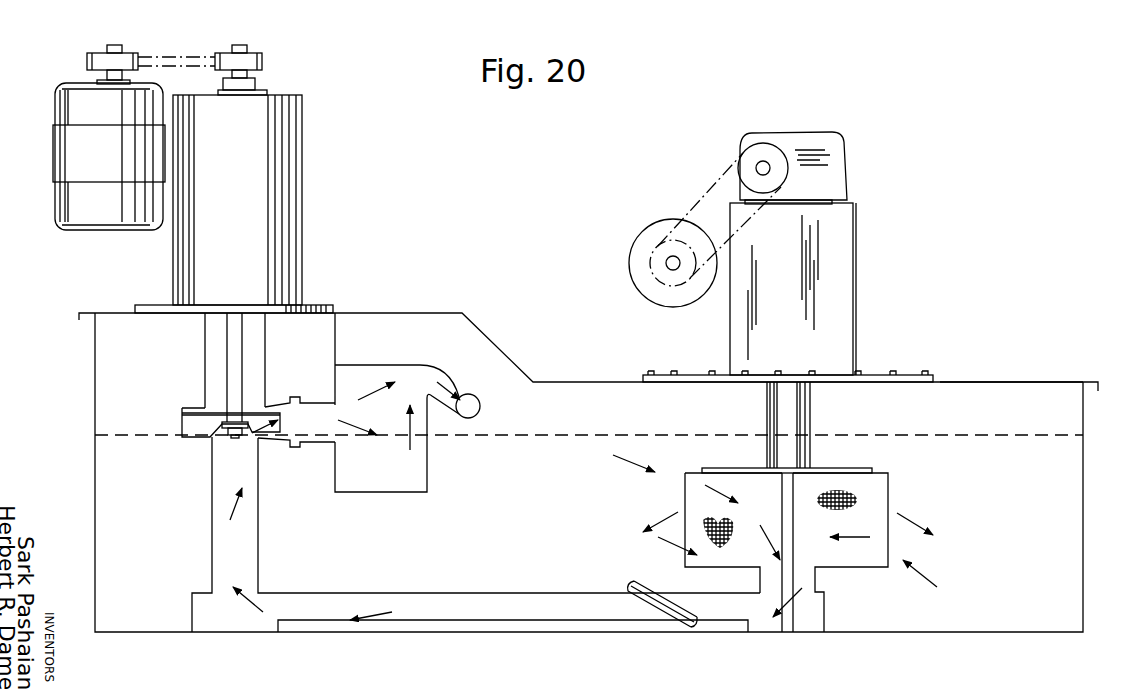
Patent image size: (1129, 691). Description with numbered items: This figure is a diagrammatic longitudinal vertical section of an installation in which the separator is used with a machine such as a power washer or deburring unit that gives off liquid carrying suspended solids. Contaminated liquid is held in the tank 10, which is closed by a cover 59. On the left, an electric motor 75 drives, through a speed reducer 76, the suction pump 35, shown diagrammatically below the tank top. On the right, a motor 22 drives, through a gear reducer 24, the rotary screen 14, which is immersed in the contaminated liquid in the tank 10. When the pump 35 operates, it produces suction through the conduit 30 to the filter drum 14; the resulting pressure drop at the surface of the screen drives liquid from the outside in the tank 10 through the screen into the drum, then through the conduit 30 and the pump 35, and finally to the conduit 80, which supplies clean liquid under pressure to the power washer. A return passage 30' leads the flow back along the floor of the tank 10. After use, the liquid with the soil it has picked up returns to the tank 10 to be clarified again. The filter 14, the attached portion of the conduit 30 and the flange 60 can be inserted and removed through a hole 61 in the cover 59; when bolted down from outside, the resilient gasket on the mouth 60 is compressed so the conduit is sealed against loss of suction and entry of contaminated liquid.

The tank 10 is at (1083, 495).
The rotary screen 14 is at (866, 503).
The motor 22 is at (632, 259).
The gear reducer 24 is at (826, 142).
The conduit 30 is at (778, 550).
The floor channel 30' is at (513, 600).
The suction pump 35 is at (198, 426).
The cover 59 is at (996, 382).
The flange 60 is at (647, 593).
The hole 61 is at (903, 384).
The electric motor 75 is at (65, 204).
The speed reducer 76 is at (290, 208).
The conduit 80 is at (480, 406).